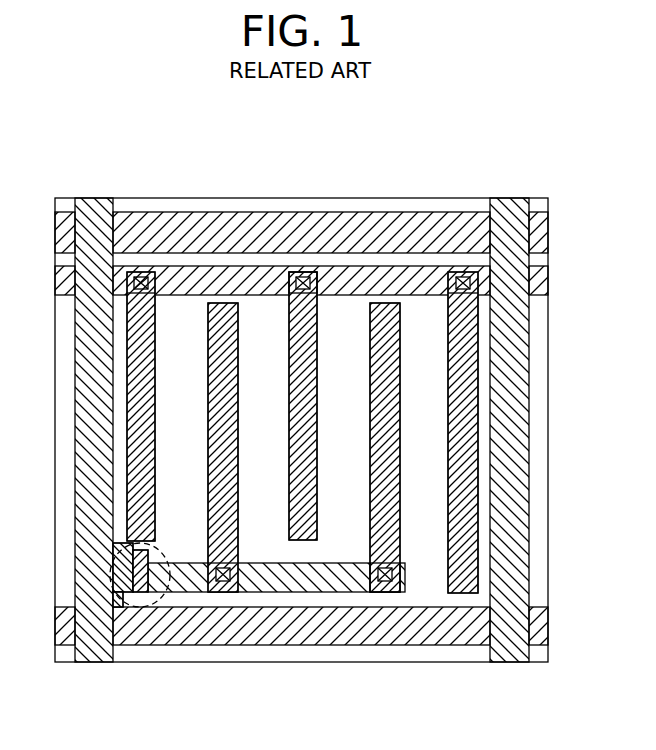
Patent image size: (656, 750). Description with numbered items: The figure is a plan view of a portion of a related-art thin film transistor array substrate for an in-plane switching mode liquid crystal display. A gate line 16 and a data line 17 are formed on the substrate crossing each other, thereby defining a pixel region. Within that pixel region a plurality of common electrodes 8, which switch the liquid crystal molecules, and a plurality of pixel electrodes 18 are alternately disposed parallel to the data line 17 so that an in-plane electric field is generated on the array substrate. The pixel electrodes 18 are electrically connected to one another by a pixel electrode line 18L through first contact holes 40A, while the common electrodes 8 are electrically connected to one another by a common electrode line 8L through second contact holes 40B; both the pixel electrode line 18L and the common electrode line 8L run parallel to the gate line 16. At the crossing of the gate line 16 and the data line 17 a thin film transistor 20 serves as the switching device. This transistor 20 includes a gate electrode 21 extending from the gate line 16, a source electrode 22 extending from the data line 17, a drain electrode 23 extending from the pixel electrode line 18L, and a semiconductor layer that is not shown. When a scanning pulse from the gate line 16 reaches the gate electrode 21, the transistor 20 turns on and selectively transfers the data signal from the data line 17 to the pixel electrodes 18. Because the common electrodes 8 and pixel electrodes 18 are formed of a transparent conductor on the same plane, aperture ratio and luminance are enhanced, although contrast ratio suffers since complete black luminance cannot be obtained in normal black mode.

The common electrode line 8L is at (542, 280).
The pixel electrodes 18 is at (385, 403).
The data line 17 is at (515, 453).
The common electrodes 8 is at (468, 507).
The gate electrode 21 is at (113, 552).
The thin film transistor 20 is at (108, 572).
The source electrode 22 is at (122, 594).
The drain electrode 23 is at (165, 594).
The pixel electrode line 18L is at (287, 578).
The first contact holes 40A is at (386, 584).
The second contact holes 40B is at (303, 283).
The gate line 16 is at (448, 632).